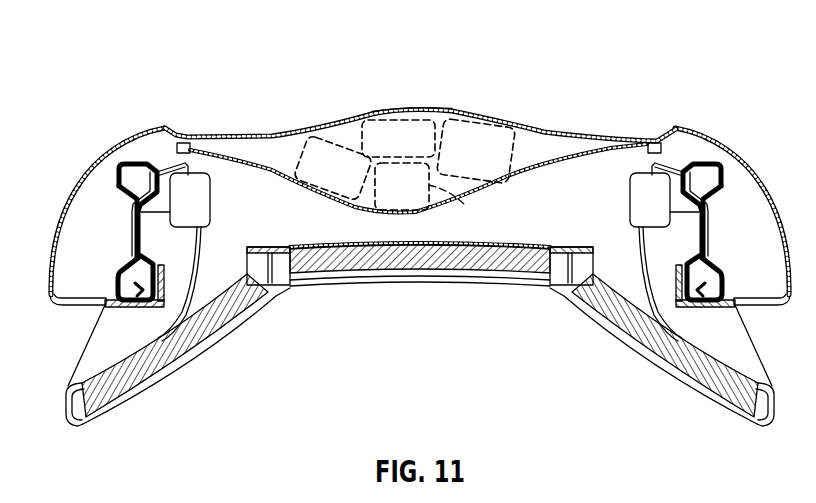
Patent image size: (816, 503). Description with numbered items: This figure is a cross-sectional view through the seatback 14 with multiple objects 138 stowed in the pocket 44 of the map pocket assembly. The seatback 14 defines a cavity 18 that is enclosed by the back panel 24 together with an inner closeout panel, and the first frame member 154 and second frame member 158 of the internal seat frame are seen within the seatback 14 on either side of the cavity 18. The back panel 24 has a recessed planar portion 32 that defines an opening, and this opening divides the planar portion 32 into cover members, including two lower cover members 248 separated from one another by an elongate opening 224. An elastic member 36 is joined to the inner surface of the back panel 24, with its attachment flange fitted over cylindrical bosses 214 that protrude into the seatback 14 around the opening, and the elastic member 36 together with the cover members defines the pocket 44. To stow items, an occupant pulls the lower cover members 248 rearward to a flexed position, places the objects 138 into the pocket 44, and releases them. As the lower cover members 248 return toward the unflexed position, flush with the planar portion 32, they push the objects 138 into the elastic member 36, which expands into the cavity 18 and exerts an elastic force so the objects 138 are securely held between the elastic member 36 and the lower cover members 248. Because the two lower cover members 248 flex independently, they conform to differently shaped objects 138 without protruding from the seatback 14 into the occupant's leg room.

The seatback 14 is at (137, 101).
The cavity 18 is at (334, 232).
The back panel 24 is at (80, 183).
The planar portion 32 is at (639, 140).
The elastic member 36 is at (487, 192).
The pocket 44 is at (530, 157).
The object 138 is at (446, 163).
The first frame member 154 is at (702, 163).
The second frame member 158 is at (132, 157).
The cylindrical boss 214 is at (193, 152).
The elongate opening 224 is at (405, 107).
The lower cover member 248 is at (315, 128).